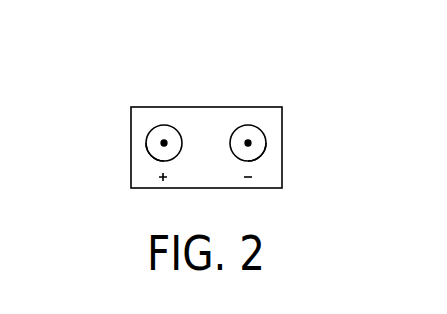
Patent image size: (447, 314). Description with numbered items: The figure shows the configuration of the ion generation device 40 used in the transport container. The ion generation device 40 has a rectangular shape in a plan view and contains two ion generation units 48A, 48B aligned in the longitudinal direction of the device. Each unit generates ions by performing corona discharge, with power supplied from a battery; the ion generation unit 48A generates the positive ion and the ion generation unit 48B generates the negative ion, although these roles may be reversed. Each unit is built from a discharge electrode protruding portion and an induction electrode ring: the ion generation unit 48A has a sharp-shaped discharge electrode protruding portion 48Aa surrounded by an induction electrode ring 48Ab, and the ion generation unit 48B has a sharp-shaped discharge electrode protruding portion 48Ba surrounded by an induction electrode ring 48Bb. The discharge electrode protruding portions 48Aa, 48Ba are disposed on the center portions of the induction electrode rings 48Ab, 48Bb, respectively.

The ion generation device 40 is at (298, 70).
The ion generation unit 48A is at (148, 135).
The discharge electrode protruding portion 48Aa is at (164, 143).
The induction electrode ring 48Ab is at (150, 151).
The ion generation unit 48B is at (265, 134).
The discharge electrode protruding portion 48Ba is at (248, 143).
The induction electrode ring 48Bb is at (264, 151).